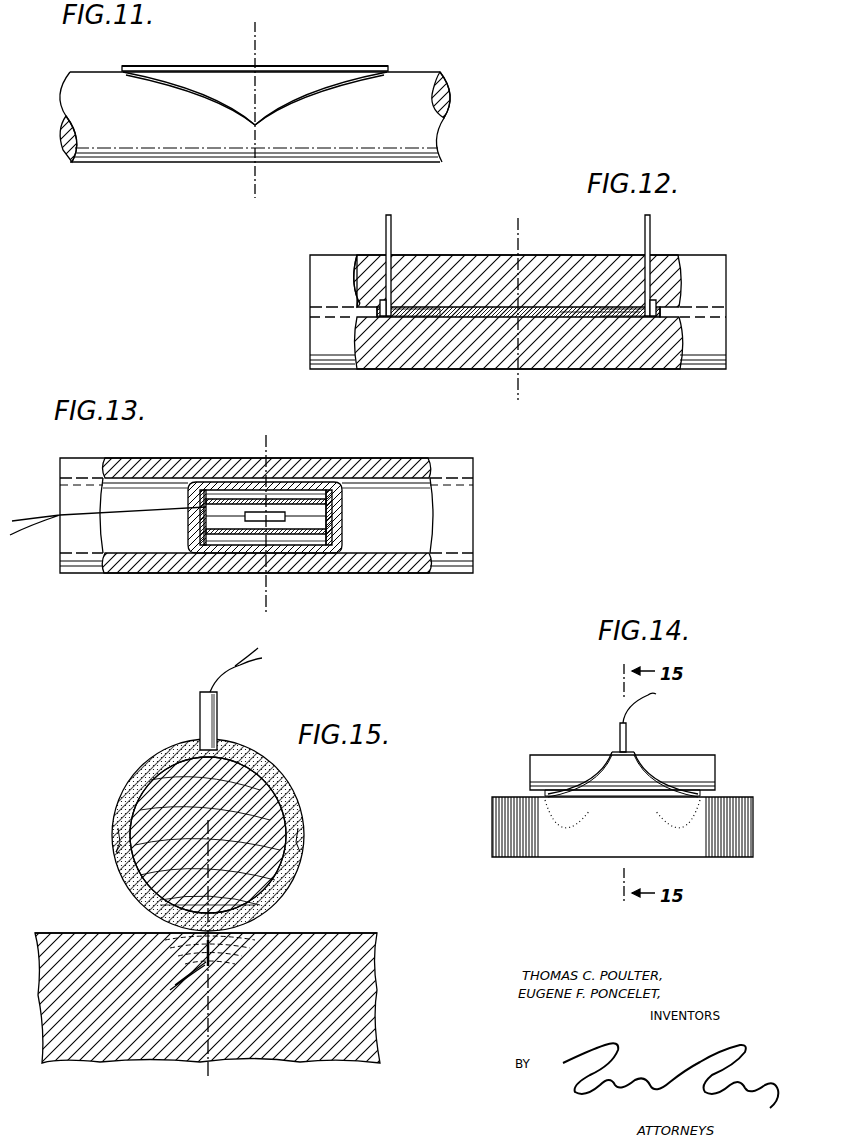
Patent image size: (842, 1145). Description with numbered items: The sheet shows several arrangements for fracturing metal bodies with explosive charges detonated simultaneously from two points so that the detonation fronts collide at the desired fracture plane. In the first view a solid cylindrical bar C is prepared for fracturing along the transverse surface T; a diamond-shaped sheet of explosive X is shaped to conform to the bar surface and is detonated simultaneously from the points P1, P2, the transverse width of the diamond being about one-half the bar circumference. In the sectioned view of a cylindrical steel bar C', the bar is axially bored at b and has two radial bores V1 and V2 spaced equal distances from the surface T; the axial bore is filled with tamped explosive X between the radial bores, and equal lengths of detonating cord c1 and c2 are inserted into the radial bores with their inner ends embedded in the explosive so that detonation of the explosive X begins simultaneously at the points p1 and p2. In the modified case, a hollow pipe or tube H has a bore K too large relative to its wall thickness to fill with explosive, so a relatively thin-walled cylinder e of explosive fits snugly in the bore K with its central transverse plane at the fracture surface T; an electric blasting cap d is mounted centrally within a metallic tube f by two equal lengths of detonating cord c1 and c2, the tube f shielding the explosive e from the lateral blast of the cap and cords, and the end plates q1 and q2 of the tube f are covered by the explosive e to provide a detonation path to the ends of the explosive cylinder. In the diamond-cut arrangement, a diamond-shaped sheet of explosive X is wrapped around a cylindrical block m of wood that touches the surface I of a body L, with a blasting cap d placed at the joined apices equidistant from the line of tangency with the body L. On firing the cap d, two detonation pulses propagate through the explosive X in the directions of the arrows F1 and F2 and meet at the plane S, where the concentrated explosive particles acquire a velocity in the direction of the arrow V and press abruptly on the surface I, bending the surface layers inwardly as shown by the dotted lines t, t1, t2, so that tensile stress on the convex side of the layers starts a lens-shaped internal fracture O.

In FIG. 11, the detonation point P1 is at (123, 70).
In FIG. 11, the detonation point P2 is at (388, 70).
In FIG. 11, the explosive X is at (278, 76).
In FIG. 12, the explosive X is at (576, 318).
In FIG. 14, the explosive X is at (612, 768).
In FIG. 15, the explosive X is at (135, 769).
In FIG. 11, the solid cylindrical bar C is at (272, 117).
In FIG. 11, the transverse surface T is at (257, 179).
In FIG. 12, the transverse surface T is at (515, 390).
In FIG. 13, the transverse surface T is at (268, 594).
In FIG. 12, the radial bore V1 is at (388, 268).
In FIG. 12, the radial bore V2 is at (648, 272).
In FIG. 12, the detonating cord c1 is at (392, 231).
In FIG. 13, the detonating cord c1 is at (215, 520).
In FIG. 12, the detonating cord c2 is at (651, 233).
In FIG. 13, the detonating cord c2 is at (315, 516).
In FIG. 12, the cylindrical steel bar C' is at (518, 296).
In FIG. 12, the detonation point p1 is at (395, 318).
In FIG. 12, the detonation point p2 is at (644, 318).
In FIG. 12, the axial bore b is at (608, 318).
In FIG. 13, the end plate q1 is at (204, 488).
In FIG. 13, the end plate q2 is at (330, 488).
In FIG. 13, the thin-walled cylinder of explosive e is at (229, 478).
In FIG. 13, the metallic tube f is at (275, 498).
In FIG. 13, the hollow pipe or tube H is at (400, 470).
In FIG. 13, the bore K is at (383, 555).
In FIG. 13, the blasting cap d is at (255, 522).
In FIG. 14, the blasting cap d is at (627, 735).
In FIG. 15, the blasting cap d is at (200, 716).
In FIG. 14, the cylindrical block m is at (700, 768).
In FIG. 15, the cylindrical block m is at (275, 810).
In FIG. 14, the body L is at (533, 858).
In FIG. 15, the body L is at (345, 1028).
In FIG. 15, the arrow F1 is at (118, 833).
In FIG. 15, the arrow F2 is at (300, 831).
In FIG. 15, the plane S is at (278, 878).
In FIG. 15, the surface I is at (50, 933).
In FIG. 15, the arrow V is at (150, 908).
In FIG. 15, the dotted line t is at (226, 934).
In FIG. 15, the dotted line t1 is at (240, 946).
In FIG. 15, the dotted line t2 is at (235, 960).
In FIG. 15, the lens-shaped internal fracture O is at (180, 975).